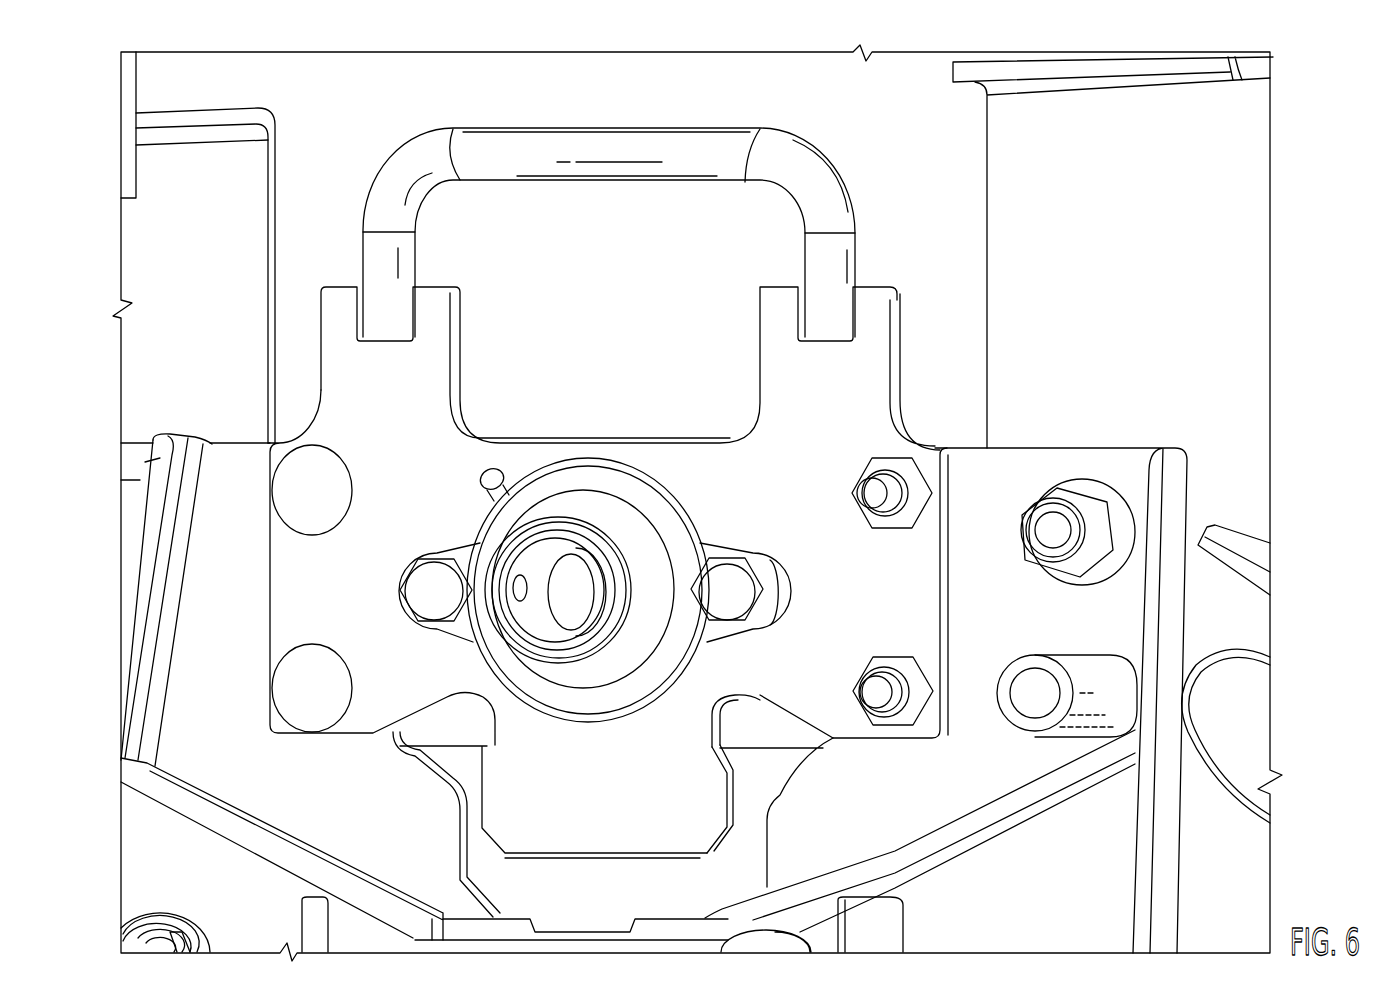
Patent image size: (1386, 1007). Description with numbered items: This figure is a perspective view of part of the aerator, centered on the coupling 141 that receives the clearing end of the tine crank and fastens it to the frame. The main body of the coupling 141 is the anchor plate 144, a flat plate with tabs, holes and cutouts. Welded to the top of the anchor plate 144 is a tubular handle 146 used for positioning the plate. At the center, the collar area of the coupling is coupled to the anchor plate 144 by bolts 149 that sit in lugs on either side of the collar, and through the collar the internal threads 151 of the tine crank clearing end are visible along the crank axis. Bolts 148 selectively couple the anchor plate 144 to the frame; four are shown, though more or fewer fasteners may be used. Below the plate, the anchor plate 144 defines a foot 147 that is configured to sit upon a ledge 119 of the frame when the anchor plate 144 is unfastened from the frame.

The ledge 119 is at (752, 892).
The coupling 141 is at (912, 258).
The anchor plate 144 is at (898, 591).
The handle 146 is at (805, 167).
The foot 147 is at (608, 822).
The bolts 148 is at (897, 488).
The bolts 149 is at (742, 586).
The internal threads 151 is at (553, 551).